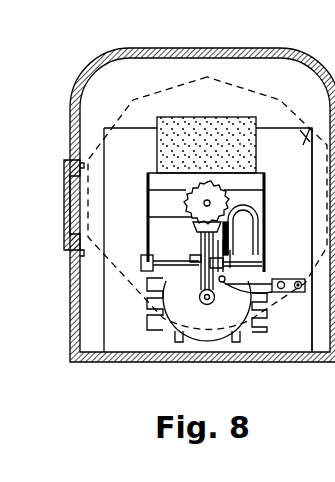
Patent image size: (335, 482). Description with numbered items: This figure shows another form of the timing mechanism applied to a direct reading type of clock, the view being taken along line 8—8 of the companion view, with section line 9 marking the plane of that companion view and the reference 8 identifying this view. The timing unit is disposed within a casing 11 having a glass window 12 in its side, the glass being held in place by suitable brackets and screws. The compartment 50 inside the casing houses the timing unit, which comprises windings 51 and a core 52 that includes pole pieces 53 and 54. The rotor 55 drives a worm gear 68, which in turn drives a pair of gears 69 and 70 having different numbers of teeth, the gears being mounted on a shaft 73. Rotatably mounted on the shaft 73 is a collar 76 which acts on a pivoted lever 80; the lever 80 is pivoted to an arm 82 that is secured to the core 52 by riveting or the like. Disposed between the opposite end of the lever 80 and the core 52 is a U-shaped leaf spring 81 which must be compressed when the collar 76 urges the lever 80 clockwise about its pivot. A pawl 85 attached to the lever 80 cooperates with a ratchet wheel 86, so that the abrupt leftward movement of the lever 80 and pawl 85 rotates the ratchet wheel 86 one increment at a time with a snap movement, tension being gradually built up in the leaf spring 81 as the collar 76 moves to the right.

The appliance 8 is at (329, 43).
The section line 9- 9 is at (207, 5).
The casing 11 is at (232, 48).
The glass window 12 is at (66, 205).
The compartment 50 is at (96, 301).
The windings 51 is at (192, 117).
The core 52 is at (308, 128).
The pole piece 53 is at (268, 309).
The pole piece 54 is at (146, 301).
The rotor 55 is at (237, 313).
The worm gear 68 is at (199, 297).
The gear 69 is at (200, 248).
The gear 70 is at (228, 258).
The shaft 73 is at (145, 258).
The collar 76 is at (232, 262).
The pivoted lever 80 is at (228, 213).
The U-shaped leaf spring 81 is at (258, 215).
The arm 82 is at (268, 285).
The pawl 85 is at (197, 232).
The ratchet wheel 86 is at (186, 203).